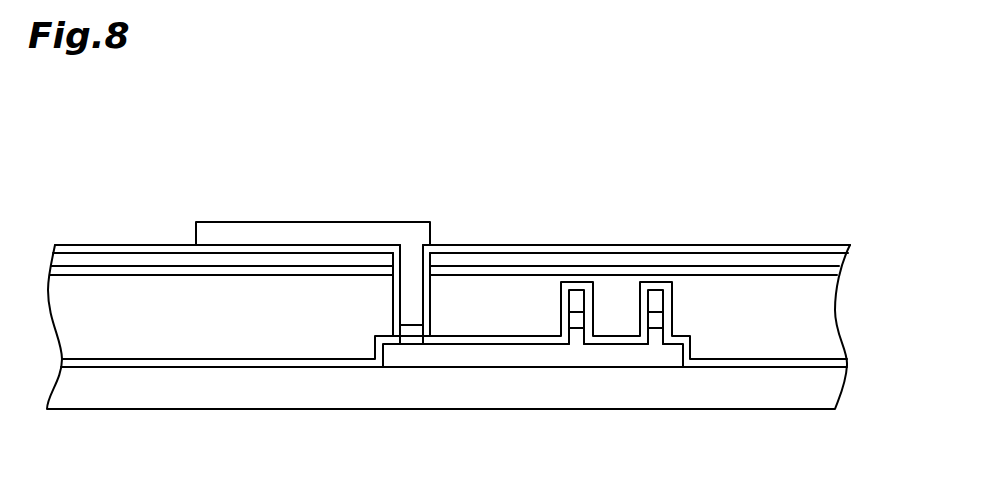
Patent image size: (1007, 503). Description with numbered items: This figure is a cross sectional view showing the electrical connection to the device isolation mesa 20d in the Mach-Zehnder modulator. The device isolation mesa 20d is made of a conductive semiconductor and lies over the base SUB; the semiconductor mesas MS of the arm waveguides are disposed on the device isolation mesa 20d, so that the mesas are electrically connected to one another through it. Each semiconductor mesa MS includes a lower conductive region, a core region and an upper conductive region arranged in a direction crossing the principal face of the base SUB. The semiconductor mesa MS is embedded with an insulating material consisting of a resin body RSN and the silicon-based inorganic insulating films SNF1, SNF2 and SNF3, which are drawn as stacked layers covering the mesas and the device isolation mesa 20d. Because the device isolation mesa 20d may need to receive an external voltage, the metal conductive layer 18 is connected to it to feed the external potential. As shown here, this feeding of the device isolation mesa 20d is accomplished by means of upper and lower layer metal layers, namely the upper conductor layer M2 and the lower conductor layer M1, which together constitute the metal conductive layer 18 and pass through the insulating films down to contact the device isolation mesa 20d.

The silicon-based inorganic insulating film SNF3 is at (70, 247).
The resin body RSN is at (168, 262).
The silicon-based inorganic insulating film SNF2 is at (105, 273).
The silicon-based inorganic insulating film SNF1 is at (85, 370).
The metal conductive layer 18 is at (468, 164).
The upper conductor layer M2 is at (397, 232).
The lower conductor layer M1 is at (413, 331).
The base SUB is at (158, 397).
The semiconductor mesa MS is at (575, 286).
The device isolation mesa 20d is at (690, 352).